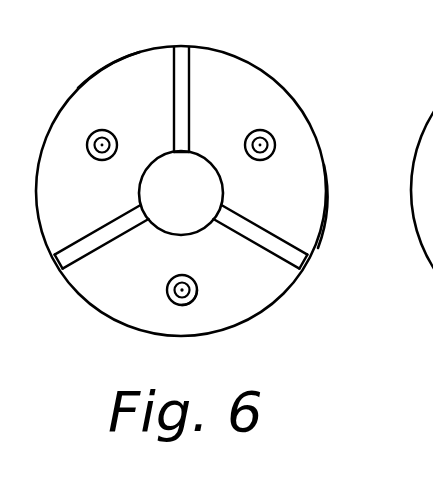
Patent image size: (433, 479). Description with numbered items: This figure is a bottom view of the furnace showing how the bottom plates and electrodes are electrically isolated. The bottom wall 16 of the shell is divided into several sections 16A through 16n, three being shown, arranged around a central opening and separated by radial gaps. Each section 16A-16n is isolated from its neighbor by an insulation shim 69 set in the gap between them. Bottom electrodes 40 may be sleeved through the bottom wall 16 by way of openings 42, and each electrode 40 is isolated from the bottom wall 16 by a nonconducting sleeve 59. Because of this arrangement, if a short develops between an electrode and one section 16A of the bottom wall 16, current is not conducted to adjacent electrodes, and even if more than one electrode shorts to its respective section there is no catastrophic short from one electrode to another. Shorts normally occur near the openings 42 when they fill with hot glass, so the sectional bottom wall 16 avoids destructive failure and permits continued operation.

The bottom wall 16 is at (257, 82).
The bottom wall section 16n is at (108, 76).
The bottom wall section 16A is at (308, 230).
The insulation shim 69 is at (58, 265).
The bottom electrode 40 is at (187, 285).
The opening 42 is at (167, 289).
The nonconducting sleeve 59 is at (197, 295).